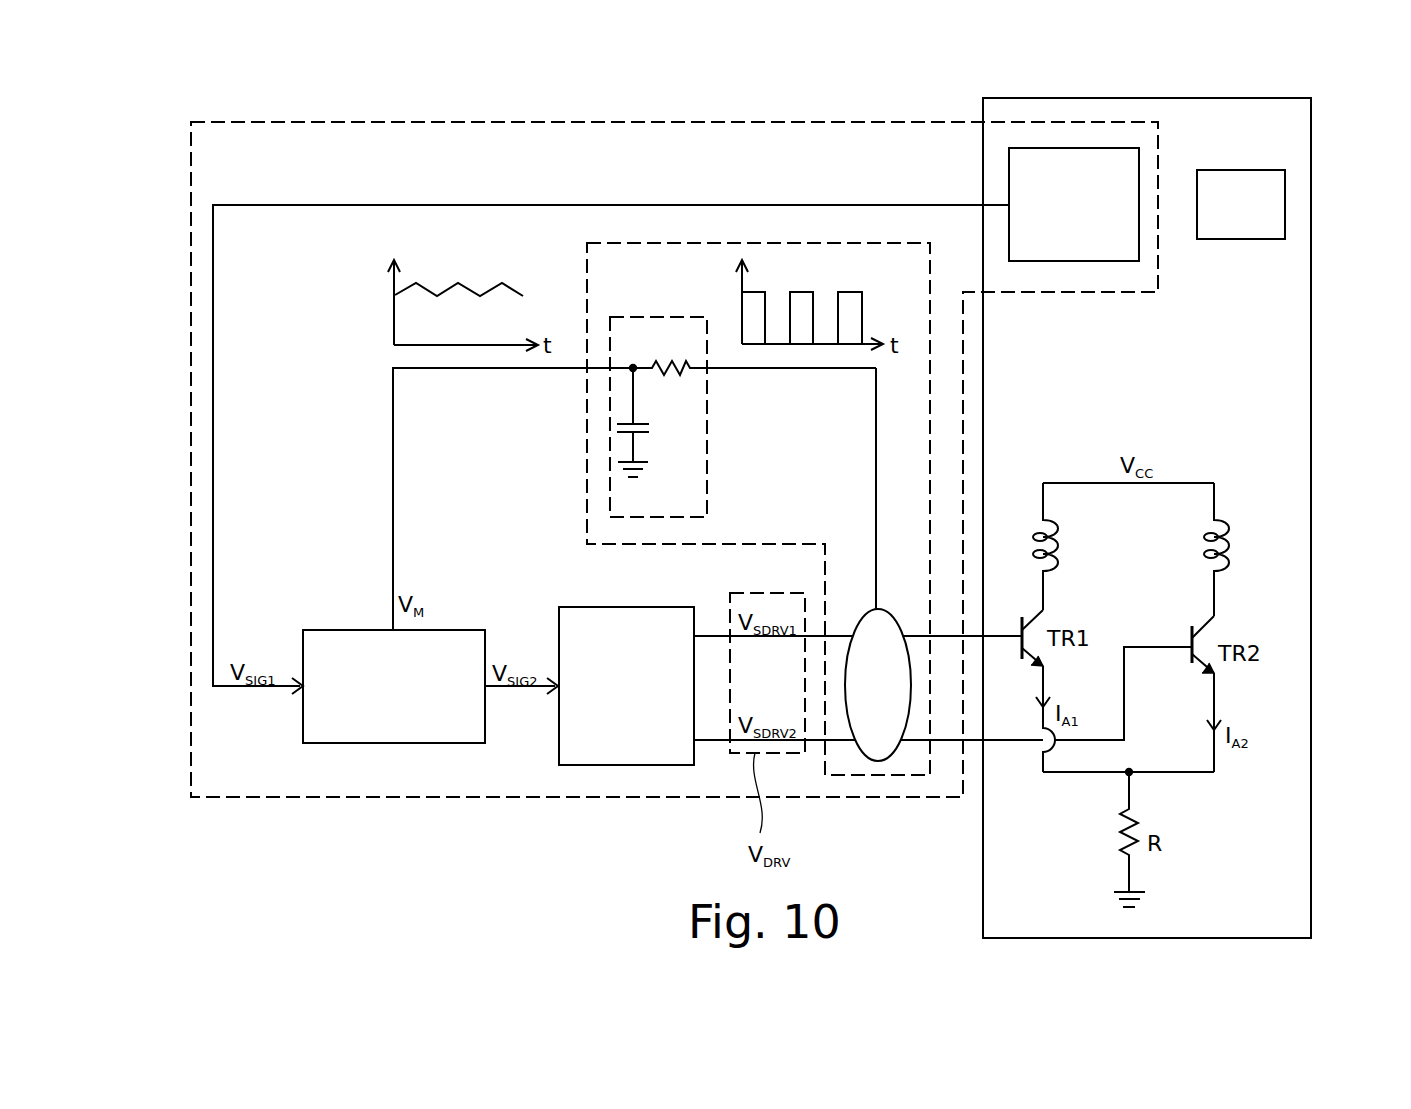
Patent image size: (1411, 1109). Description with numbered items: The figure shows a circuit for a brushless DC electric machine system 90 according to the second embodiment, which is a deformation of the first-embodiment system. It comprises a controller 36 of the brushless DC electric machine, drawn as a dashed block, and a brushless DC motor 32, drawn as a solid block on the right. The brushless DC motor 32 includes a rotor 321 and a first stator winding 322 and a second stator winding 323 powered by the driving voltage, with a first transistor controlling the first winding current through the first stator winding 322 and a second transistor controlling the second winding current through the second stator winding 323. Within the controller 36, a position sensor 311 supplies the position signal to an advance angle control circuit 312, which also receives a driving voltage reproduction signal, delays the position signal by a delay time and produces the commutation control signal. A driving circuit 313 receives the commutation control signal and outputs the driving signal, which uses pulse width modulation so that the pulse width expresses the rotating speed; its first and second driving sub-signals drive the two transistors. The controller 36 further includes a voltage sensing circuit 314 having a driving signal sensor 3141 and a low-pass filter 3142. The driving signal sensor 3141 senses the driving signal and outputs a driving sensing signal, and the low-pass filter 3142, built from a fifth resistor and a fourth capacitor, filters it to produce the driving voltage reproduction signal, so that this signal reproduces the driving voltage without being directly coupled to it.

The brushless DC electric machine system 90 is at (706, 80).
The controller of the brushless DC electric machine 36 is at (420, 122).
The brushless DC motor 32 is at (1313, 823).
The position sensor 311 is at (1009, 176).
The advance angle control circuit 312 is at (348, 630).
The driving circuit 313 is at (612, 765).
The voltage sensing circuit 314 is at (587, 453).
The driving signal sensor 3141 is at (880, 762).
The low-pass filter 3142 is at (707, 452).
The rotor 321 is at (1235, 170).
The first stator winding 322 is at (1052, 537).
The second stator winding 323 is at (1222, 533).